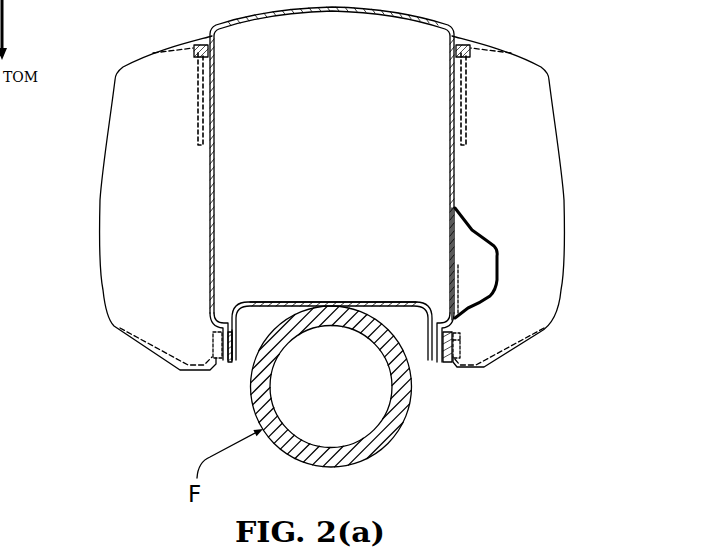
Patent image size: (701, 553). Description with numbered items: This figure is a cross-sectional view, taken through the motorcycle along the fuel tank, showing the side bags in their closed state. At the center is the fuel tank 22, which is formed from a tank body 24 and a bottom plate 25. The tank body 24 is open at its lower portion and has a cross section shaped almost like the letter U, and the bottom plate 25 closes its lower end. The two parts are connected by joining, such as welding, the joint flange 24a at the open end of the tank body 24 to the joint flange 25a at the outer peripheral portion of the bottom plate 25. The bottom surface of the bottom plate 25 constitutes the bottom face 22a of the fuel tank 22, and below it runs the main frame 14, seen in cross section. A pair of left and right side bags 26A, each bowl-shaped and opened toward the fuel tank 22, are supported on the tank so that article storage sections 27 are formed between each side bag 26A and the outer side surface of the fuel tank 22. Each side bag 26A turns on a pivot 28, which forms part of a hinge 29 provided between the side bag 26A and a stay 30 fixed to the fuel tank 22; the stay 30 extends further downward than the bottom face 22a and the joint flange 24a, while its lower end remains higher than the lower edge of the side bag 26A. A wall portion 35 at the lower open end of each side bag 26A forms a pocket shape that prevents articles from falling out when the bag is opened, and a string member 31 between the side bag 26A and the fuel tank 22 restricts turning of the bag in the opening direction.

The main frame 14 is at (388, 432).
The fuel tank 22 is at (229, 184).
The bottom face 22a is at (381, 307).
The tank body 24 is at (210, 170).
The joint flange 24a is at (230, 358).
The bottom plate 25 is at (252, 302).
The joint flange 25a is at (233, 340).
The side bag 26A is at (115, 160).
The article storage section 27 is at (493, 271).
The pivot 28 is at (450, 367).
The hinge 29 is at (450, 338).
The stay 30 is at (440, 362).
The string member 31 is at (200, 100).
The wall portion 35 is at (458, 280).